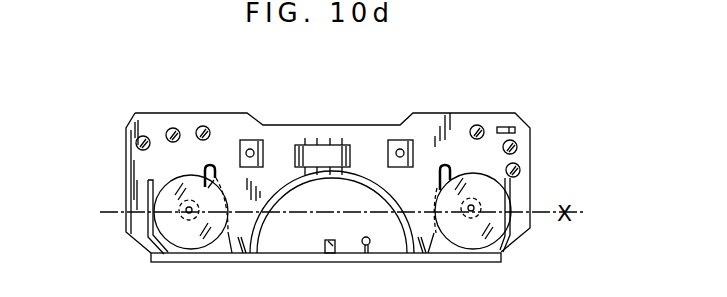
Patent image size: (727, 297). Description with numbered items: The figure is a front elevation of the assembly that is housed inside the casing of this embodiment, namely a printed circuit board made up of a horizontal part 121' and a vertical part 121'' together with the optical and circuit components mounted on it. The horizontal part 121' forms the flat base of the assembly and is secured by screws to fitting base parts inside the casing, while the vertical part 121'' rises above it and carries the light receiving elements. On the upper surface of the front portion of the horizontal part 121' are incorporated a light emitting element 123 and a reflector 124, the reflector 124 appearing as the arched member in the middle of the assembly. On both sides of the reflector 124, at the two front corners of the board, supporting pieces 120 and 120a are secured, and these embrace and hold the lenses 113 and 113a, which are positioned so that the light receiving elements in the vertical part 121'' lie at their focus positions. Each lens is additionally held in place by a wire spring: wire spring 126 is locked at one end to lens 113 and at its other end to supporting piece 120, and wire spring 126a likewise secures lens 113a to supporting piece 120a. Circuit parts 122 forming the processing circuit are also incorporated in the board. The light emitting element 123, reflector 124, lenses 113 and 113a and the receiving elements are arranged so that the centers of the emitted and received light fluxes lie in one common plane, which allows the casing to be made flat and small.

The lens 113 is at (170, 178).
The lens 113a is at (487, 192).
The supporting piece 120 is at (147, 230).
The supporting piece 120a is at (501, 250).
The horizontal part 121' is at (326, 275).
The vertical part 121'' is at (328, 164).
The circuit parts 122 is at (308, 145).
The light emitting element 123 is at (323, 253).
The reflector 124 is at (358, 177).
The wire spring 126 is at (207, 177).
The wire spring 126a is at (450, 168).